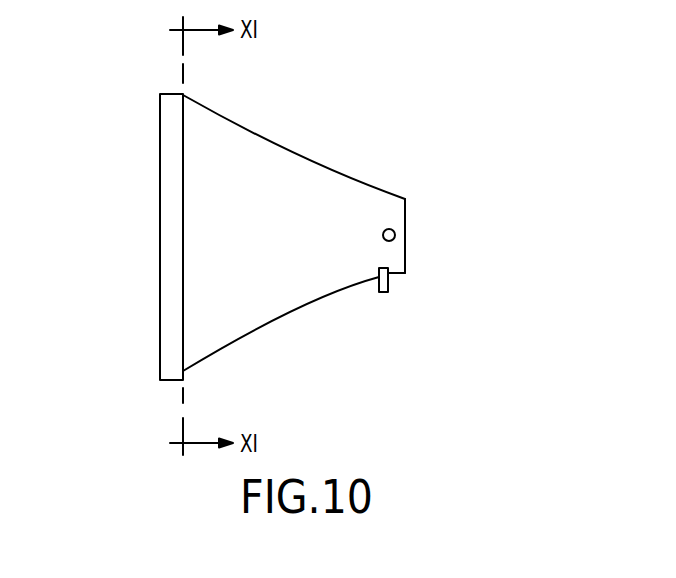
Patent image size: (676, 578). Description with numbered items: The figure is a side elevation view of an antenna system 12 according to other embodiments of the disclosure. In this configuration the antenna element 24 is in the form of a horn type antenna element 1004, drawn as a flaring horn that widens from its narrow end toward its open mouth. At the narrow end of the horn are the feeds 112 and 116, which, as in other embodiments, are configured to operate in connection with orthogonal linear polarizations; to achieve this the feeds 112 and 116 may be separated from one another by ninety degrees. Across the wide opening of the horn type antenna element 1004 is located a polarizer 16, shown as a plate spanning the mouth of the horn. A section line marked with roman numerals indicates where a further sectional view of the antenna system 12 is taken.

The horn / antenna feed assembly 12 is at (291, 241).
The mounting flange / end plate 16 is at (167, 373).
The lower horn wall 24 is at (333, 290).
The aperture / hole 112 is at (396, 230).
The tab / connector block 116 is at (388, 289).
The upper horn wall 1004 is at (358, 193).